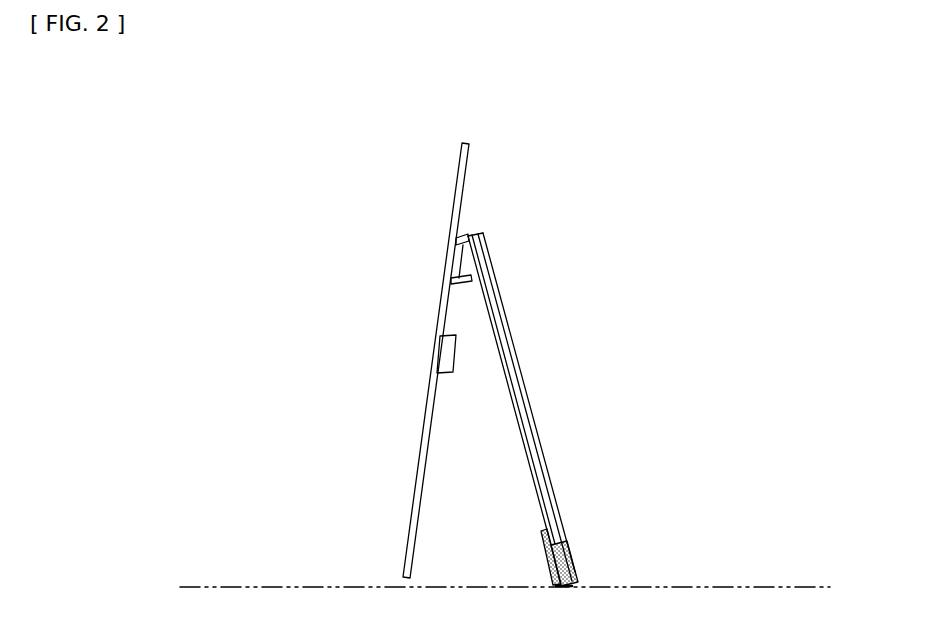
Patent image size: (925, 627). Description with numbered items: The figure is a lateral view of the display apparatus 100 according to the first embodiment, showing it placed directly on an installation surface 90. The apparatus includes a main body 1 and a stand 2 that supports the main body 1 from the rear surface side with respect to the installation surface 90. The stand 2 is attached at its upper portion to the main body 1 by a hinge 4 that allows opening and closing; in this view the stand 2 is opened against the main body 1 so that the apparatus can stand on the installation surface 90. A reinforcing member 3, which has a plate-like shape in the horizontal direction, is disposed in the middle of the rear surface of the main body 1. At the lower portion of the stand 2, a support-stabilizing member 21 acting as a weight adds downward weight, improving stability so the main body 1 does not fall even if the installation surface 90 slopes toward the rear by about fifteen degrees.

The display apparatus 100 is at (600, 153).
The main body 1 is at (456, 188).
The stand 2 is at (517, 357).
The support-stabilizing member 21 is at (573, 553).
The reinforcing member 3 is at (437, 353).
The hinge 4 is at (467, 263).
The installation surface 90 is at (263, 587).